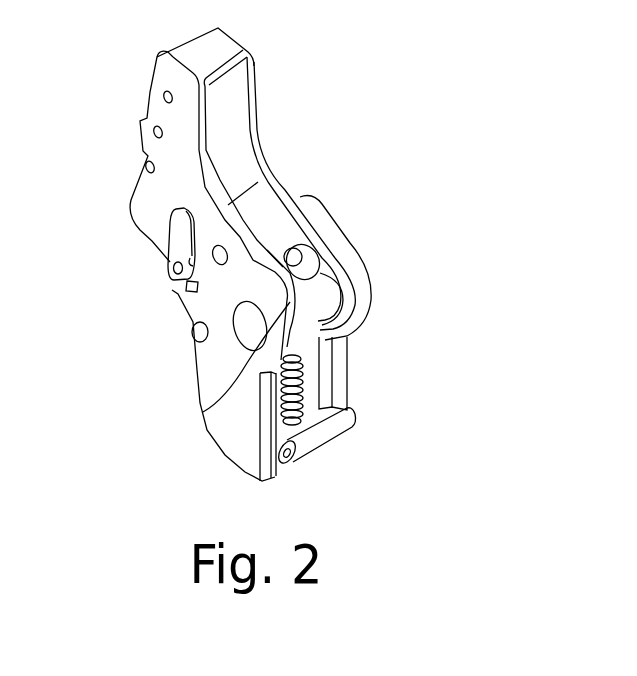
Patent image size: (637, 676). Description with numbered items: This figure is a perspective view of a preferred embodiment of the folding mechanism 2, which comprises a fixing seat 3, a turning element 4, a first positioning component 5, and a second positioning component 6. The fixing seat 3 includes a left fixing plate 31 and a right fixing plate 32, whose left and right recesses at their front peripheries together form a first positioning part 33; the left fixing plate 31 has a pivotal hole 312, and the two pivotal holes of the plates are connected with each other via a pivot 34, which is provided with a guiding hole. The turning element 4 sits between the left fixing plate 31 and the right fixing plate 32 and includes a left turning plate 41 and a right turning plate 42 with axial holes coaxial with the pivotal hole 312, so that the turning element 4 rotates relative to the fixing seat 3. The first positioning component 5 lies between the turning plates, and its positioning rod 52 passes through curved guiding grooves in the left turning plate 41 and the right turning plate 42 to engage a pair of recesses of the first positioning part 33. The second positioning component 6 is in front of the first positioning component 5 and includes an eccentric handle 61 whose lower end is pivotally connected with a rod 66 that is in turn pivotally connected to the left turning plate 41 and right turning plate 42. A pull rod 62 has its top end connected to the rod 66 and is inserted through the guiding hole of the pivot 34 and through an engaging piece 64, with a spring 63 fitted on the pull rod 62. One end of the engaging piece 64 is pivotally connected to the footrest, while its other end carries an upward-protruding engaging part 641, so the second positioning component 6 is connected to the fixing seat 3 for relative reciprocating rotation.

The folding mechanism 2 is at (443, 88).
The fixing seat 3 is at (449, 279).
The left fixing plate 31 is at (295, 345).
The right fixing plate 32 is at (370, 297).
The pivotal hole 312 is at (203, 412).
The pivot 34 is at (250, 330).
The turning element 4 is at (390, 122).
The left turning plate 41 is at (214, 163).
The right turning plate 42 is at (283, 200).
The first positioning component 5 is at (170, 241).
The positioning rod 52 is at (191, 333).
The first positioning part 33 is at (182, 288).
The second positioning component 6 is at (335, 285).
The eccentric handle 61 is at (232, 92).
The rod 66 is at (305, 270).
The pull rod 62 is at (349, 436).
The spring 63 is at (300, 413).
The engaging piece 64 is at (305, 450).
The engaging part 641 is at (270, 403).